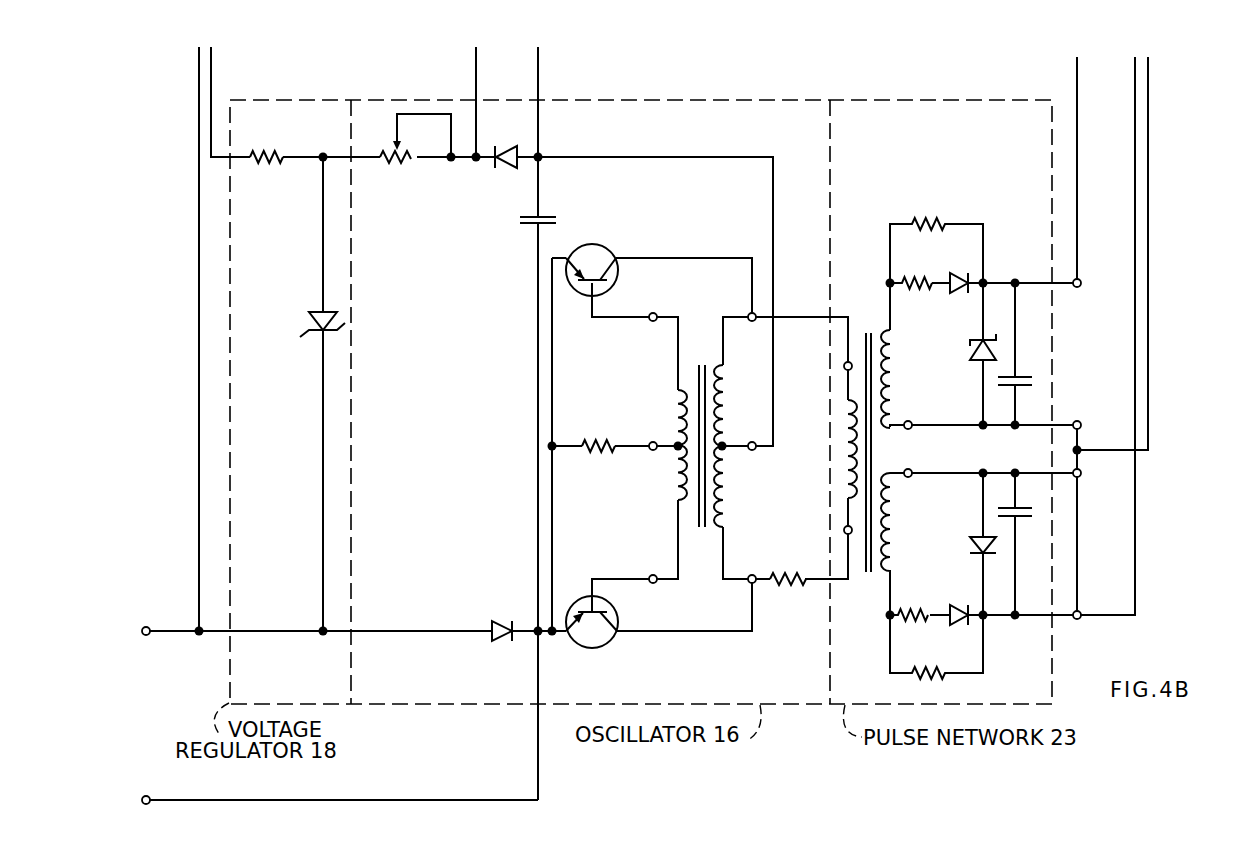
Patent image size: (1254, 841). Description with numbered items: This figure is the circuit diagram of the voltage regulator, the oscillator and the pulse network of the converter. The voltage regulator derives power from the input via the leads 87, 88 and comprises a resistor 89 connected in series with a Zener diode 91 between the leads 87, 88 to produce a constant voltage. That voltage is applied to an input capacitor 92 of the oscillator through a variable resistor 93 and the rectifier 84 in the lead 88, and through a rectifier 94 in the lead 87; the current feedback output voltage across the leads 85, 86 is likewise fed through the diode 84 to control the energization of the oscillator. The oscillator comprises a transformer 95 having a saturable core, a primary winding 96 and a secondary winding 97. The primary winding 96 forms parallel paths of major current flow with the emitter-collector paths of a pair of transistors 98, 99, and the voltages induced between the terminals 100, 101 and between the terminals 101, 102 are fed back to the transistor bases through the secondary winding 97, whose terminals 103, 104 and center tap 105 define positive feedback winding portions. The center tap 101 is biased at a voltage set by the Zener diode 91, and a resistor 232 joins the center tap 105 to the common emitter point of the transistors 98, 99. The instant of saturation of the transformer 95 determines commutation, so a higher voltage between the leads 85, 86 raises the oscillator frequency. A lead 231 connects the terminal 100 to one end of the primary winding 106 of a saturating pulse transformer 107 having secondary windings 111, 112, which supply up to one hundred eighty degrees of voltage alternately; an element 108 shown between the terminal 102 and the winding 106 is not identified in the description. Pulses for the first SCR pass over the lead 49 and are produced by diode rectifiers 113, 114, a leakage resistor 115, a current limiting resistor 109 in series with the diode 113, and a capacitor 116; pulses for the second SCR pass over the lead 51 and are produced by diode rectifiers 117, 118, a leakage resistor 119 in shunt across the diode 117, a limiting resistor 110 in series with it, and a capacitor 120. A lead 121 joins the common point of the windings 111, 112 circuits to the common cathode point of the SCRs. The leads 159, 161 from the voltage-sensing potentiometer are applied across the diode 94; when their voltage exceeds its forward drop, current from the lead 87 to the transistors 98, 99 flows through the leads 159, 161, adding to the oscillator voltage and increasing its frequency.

The lead 87 is at (199, 72).
The lead 88 is at (211, 72).
The resistor 89 is at (275, 152).
The variable resistor 93 is at (380, 153).
The lead 85 is at (476, 75).
The diode 84 is at (507, 147).
The lead 86 is at (540, 86).
The input capacitor 92 is at (552, 224).
The Zener diode 91 is at (318, 312).
The transistor 98 is at (606, 248).
The transistor 99 is at (578, 598).
The resistor 232 is at (600, 442).
The center tap 105 is at (653, 441).
The terminal 103 is at (653, 313).
The terminal 104 is at (653, 575).
The terminal 100 is at (755, 312).
The terminal 102 is at (750, 575).
The center terminal 101 is at (752, 441).
The secondary winding 97 is at (678, 480).
The primary winding 96 is at (726, 514).
The transformer 95 is at (700, 360).
The resistor 108 is at (782, 582).
The rectifier 94 is at (502, 620).
The lead 159 is at (160, 628).
The tap lead 161 is at (160, 801).
The lead 231 is at (830, 293).
The primary winding 106 is at (848, 432).
The transformer 107 is at (872, 325).
The secondary winding 111 is at (908, 379).
The secondary winding 112 is at (888, 520).
The leakage resistor 119 is at (915, 224).
The limiting resistor 110 is at (926, 282).
The diode rectifier 117 is at (968, 275).
The diode rectifier 118 is at (977, 360).
The capacitor 120 is at (1027, 378).
The capacitor 116 is at (1032, 512).
The diode rectifier 114 is at (968, 548).
The diode rectifier 113 is at (955, 605).
The current limiting resistor 109 is at (930, 590).
The leakage resistor 115 is at (932, 670).
The lead 51 is at (1077, 80).
The lead 49 is at (1135, 80).
The lead 121 is at (1148, 93).